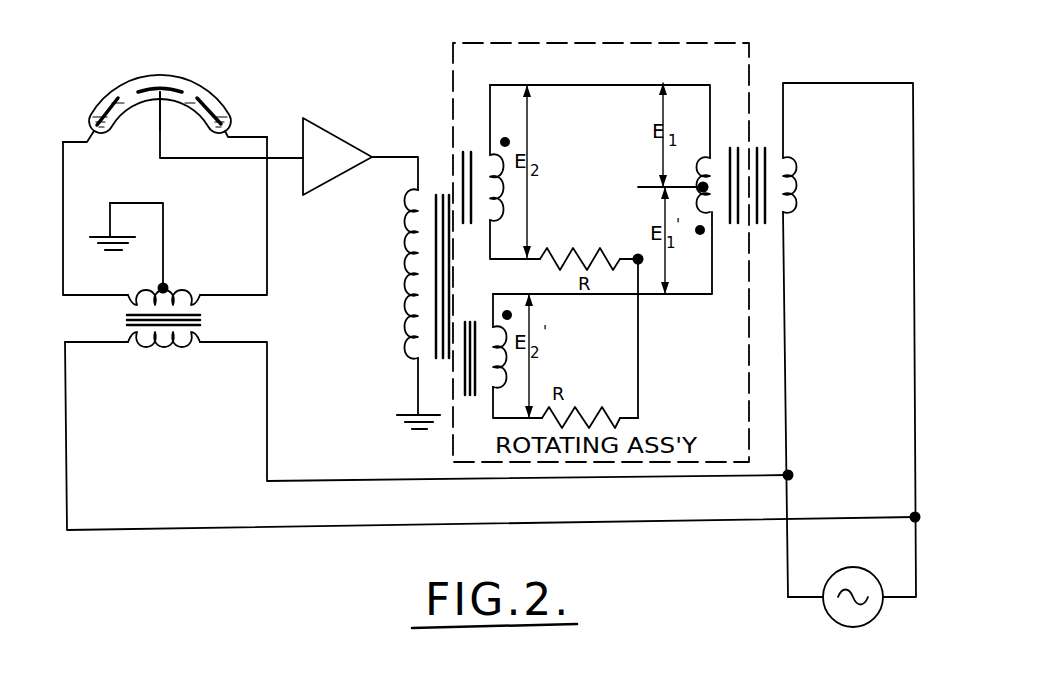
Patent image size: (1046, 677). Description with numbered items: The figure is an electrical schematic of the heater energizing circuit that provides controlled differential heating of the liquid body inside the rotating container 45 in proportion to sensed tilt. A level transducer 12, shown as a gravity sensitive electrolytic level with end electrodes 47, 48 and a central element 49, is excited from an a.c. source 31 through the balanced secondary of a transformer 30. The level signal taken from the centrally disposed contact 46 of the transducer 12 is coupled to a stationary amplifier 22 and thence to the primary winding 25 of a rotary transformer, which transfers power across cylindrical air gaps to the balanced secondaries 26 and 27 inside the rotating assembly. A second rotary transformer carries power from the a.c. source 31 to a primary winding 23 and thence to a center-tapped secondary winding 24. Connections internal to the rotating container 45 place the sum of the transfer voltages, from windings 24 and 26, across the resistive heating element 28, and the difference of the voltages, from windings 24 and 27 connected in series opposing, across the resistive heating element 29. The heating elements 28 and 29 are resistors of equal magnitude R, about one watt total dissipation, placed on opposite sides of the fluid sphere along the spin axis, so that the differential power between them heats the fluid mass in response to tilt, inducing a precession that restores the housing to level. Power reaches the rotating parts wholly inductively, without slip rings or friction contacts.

The level transducer 12 is at (162, 76).
The amplifier 22 is at (347, 138).
The primary winding 23 is at (793, 185).
The center-tapped secondary winding 24 is at (716, 148).
The primary winding 25 is at (408, 257).
The secondary winding 26 is at (487, 152).
The secondary winding 27 is at (487, 325).
The resistive heating element 28 is at (585, 270).
The resistive heating element 29 is at (586, 413).
The transformer 30 is at (203, 315).
The a.c. source 31 is at (855, 566).
The rotating container 45 is at (690, 32).
The centrally disposed contact 46 is at (172, 100).
The electrode 47 is at (97, 103).
The electrode 48 is at (215, 103).
The center electrode 49 is at (130, 94).